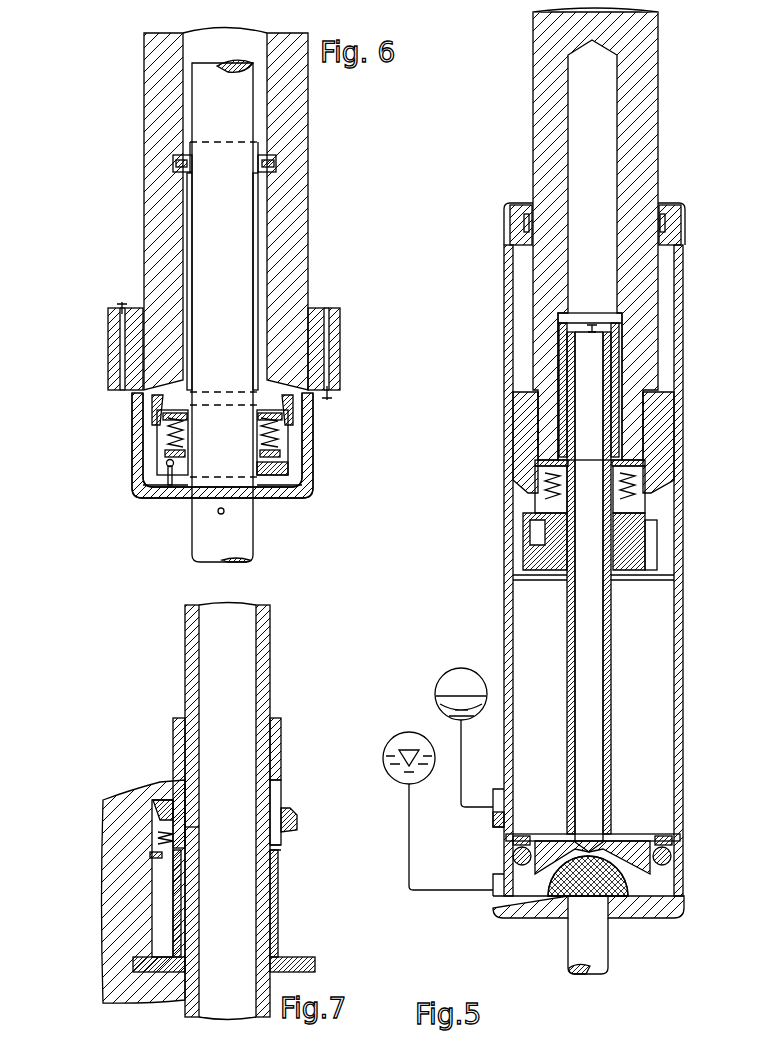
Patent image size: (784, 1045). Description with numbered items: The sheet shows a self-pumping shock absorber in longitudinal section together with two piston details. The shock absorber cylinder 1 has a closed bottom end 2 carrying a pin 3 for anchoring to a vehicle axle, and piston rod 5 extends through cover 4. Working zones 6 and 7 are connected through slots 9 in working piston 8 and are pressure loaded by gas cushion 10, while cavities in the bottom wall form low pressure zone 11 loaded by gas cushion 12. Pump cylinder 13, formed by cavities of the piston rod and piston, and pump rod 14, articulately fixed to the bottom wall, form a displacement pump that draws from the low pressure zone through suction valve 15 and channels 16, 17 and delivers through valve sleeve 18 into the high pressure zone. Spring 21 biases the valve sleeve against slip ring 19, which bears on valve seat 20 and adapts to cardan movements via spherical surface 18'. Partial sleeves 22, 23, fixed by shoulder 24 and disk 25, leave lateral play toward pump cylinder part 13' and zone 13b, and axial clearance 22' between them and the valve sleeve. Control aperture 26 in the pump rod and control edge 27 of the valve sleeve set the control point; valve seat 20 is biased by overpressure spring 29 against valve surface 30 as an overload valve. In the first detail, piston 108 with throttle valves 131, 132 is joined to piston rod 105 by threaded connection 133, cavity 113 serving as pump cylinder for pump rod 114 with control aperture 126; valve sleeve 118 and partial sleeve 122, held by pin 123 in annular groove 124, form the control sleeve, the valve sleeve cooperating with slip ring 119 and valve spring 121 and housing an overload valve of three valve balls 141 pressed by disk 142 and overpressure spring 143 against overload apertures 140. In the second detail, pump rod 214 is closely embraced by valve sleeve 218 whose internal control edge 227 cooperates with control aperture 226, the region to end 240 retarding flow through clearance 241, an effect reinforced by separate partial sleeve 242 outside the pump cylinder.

In FIG. 5, the shock absorber cylinder 1 is at (681, 661).
In FIG. 5, the closed bottom end 2 is at (636, 912).
In FIG. 5, the pin 3 is at (590, 958).
In FIG. 5, the cover 4 is at (683, 223).
In FIG. 5, the piston rod 5 is at (650, 117).
In FIG. 5, the working zone 6 is at (650, 608).
In FIG. 5, the working zone 7 is at (664, 330).
In FIG. 5, the working piston 8 is at (525, 410).
In FIG. 5, the slots 9 is at (518, 448).
In FIG. 5, the gas cushion 10 is at (453, 680).
In FIG. 5, the low pressure zone 11 is at (518, 890).
In FIG. 5, the gas cushion 12 is at (409, 733).
In FIG. 5, the pump cylinder 13 is at (524, 127).
In FIG. 5, the pump cylinder part 13' is at (497, 327).
In FIG. 5, the zone 13b is at (533, 497).
In FIG. 5, the pump rod 14 is at (612, 720).
In FIG. 5, the suction valve 15 is at (596, 325).
In FIG. 5, the channel 16 is at (592, 680).
In FIG. 5, the channel 17 is at (552, 870).
In FIG. 5, the valve sleeve 18 is at (675, 517).
In FIG. 5, the spherical surface 18' is at (687, 550).
In FIG. 5, the slip ring 19 is at (628, 521).
In FIG. 5, the valve seat 20 is at (636, 496).
In FIG. 5, the spring 21 is at (548, 550).
In FIG. 5, the partial sleeve 22 is at (679, 442).
In FIG. 5, the axial clearance 22' is at (687, 443).
In FIG. 5, the partial sleeve 23 is at (626, 365).
In FIG. 5, the shoulder 24 is at (563, 318).
In FIG. 5, the disk 25 is at (545, 463).
In FIG. 5, the control aperture 26 is at (580, 573).
In FIG. 5, the control edge 27 is at (648, 576).
In FIG. 5, the overpressure spring 29 is at (548, 478).
In FIG. 5, the valve surface 30 is at (530, 523).
In FIG. 6, the piston rod 105 is at (156, 97).
In FIG. 6, the piston 108 is at (146, 384).
In FIG. 6, the cavity 113 is at (203, 50).
In FIG. 6, the pump rod 114 is at (240, 504).
In FIG. 6, the valve sleeve 118 is at (285, 450).
In FIG. 6, the slip ring 119 is at (157, 407).
In FIG. 6, the valve spring 121 is at (136, 490).
In FIG. 6, the partial sleeve 122 is at (262, 232).
In FIG. 6, the pin 123 is at (178, 163).
In FIG. 6, the annular groove 124 is at (280, 160).
In FIG. 6, the control aperture 126 is at (224, 513).
In FIG. 6, the throttle valve 131 is at (121, 300).
In FIG. 6, the throttle valve 132 is at (330, 396).
In FIG. 6, the threaded connection 133 is at (318, 301).
In FIG. 6, the overload apertures 140 is at (170, 470).
In FIG. 6, the valve balls 141 is at (166, 463).
In FIG. 6, the disk 142 is at (288, 463).
In FIG. 6, the overpressure spring 143 is at (280, 430).
In FIG. 7, the pump rod 214 is at (190, 677).
In FIG. 7, the valve sleeve 218 is at (278, 742).
In FIG. 7, the control aperture 226 is at (168, 795).
In FIG. 7, the control edge 227 is at (279, 778).
In FIG. 7, the end 240 is at (282, 847).
In FIG. 7, the clearance 241 is at (282, 800).
In FIG. 7, the partial sleeve 242 is at (278, 903).